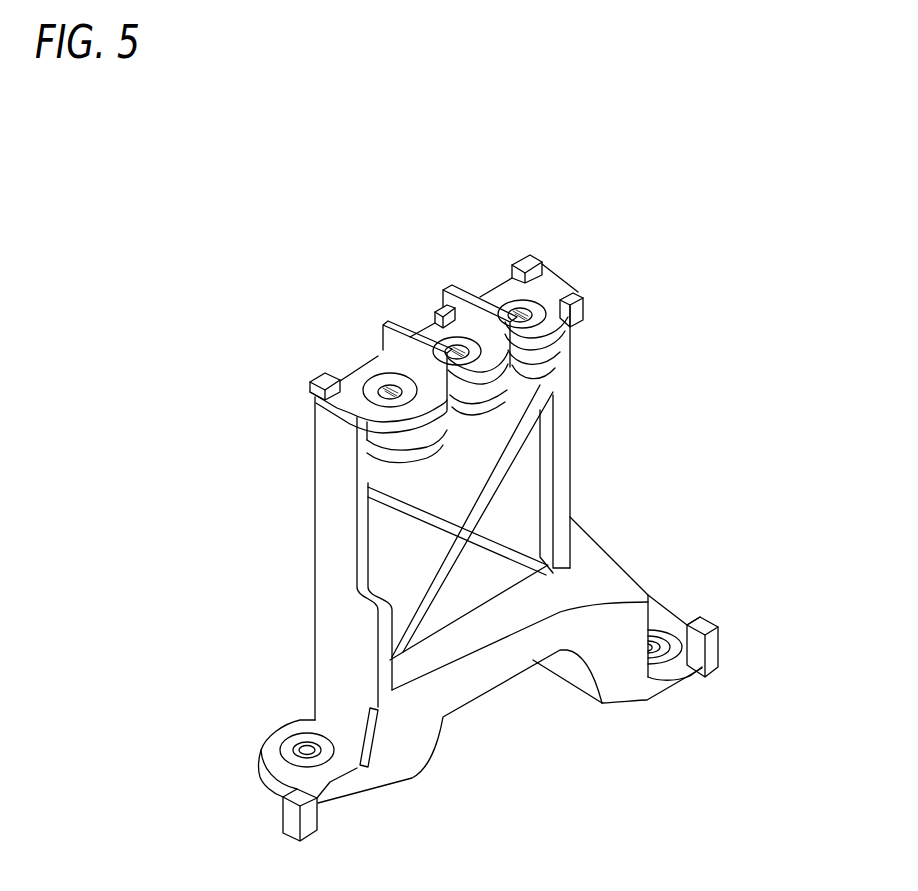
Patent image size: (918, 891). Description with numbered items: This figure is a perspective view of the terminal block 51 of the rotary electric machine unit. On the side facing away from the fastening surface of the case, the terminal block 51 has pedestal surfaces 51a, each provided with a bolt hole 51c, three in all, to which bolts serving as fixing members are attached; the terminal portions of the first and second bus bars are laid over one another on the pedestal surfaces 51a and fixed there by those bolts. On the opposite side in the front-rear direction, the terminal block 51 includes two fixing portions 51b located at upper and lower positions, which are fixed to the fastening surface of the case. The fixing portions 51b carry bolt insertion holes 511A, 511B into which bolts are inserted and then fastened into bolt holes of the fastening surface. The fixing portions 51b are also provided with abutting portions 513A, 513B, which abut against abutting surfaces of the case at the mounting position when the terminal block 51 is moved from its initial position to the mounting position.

The terminal block 51 is at (303, 260).
The pedestal surfaces 51a is at (437, 327).
The fixing portions 51b is at (663, 612).
The bolt holes 51c is at (385, 388).
The bolt insertion hole 511A is at (308, 748).
The bolt insertion hole 511B is at (700, 653).
The abutting portion 513A is at (310, 807).
The abutting portion 513B is at (718, 638).